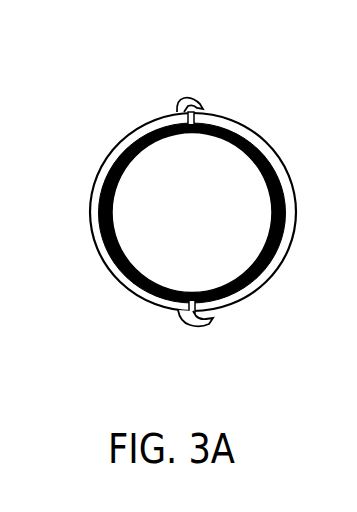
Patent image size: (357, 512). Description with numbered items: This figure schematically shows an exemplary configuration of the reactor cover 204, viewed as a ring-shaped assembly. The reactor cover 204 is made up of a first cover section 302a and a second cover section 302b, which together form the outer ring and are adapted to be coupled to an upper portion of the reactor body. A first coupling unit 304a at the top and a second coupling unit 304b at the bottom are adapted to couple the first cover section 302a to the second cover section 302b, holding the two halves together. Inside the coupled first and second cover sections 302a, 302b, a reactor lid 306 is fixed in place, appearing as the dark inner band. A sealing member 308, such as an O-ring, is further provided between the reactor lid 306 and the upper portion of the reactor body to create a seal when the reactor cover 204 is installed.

The reactor cover 204 is at (157, 48).
The first cover section 302a is at (243, 120).
The second cover section 302b is at (134, 129).
The first coupling unit 304a is at (186, 97).
The second coupling unit 304b is at (190, 325).
The reactor lid 306 is at (126, 262).
The sealing member 308 is at (100, 230).